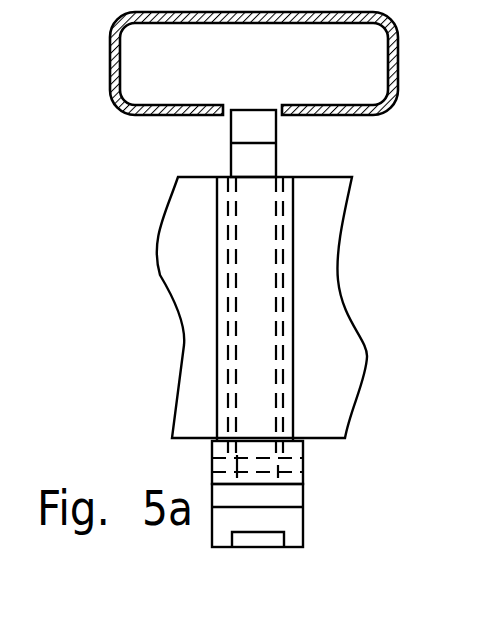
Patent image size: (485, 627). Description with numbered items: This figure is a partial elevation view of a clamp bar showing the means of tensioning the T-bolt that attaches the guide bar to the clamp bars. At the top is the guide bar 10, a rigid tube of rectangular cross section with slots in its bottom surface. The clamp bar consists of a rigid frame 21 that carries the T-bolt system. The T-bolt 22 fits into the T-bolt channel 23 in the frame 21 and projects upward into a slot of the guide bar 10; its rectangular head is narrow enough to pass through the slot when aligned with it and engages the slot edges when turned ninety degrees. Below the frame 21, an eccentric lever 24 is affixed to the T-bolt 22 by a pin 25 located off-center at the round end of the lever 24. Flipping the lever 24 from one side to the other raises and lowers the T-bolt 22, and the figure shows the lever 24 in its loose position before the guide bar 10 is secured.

The guide bar 10 is at (132, 115).
The frame 21 is at (185, 273).
The T-bolt 22 is at (276, 157).
The T-bolt channel 23 is at (217, 338).
The eccentric lever 24 is at (304, 500).
The pin 25 is at (304, 465).